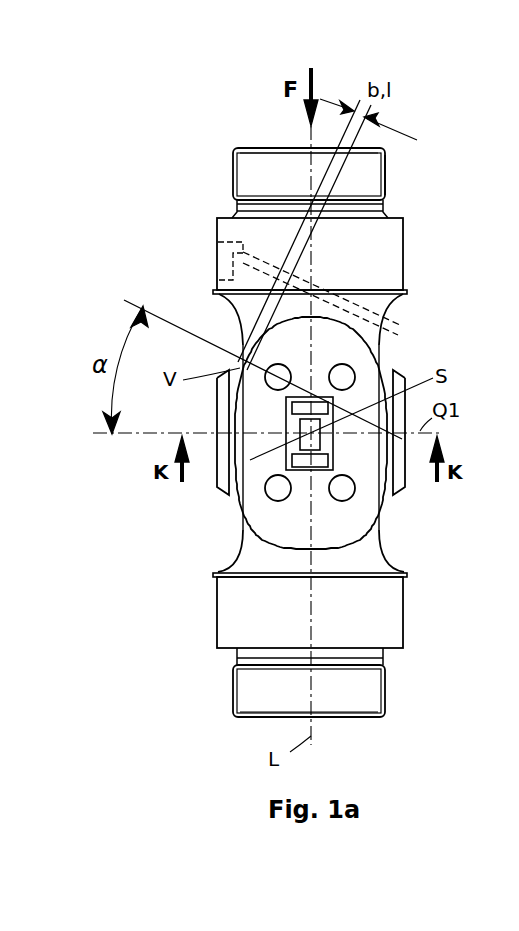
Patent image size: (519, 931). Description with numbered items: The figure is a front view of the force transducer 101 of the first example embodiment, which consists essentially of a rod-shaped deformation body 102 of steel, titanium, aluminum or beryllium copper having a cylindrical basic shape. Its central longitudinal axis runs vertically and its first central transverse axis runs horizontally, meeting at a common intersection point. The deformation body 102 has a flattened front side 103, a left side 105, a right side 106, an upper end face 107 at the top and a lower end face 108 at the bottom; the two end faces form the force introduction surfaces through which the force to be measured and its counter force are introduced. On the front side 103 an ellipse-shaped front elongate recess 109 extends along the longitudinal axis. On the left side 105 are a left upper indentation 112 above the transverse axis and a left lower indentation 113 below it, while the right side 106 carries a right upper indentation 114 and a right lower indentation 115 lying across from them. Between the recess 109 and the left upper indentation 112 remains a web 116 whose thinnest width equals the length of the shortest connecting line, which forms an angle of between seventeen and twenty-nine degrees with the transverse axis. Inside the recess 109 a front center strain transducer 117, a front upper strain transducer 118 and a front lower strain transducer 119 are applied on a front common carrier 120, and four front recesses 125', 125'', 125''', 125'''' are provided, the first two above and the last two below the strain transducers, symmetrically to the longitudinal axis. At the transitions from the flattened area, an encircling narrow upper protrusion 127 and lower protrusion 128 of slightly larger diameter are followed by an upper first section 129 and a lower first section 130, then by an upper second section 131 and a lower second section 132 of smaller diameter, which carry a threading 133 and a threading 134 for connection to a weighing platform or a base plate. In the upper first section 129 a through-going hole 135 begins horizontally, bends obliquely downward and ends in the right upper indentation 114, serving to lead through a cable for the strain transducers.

The force transducer 101 is at (147, 128).
The upper end face 107 is at (293, 148).
The threading 133 is at (386, 168).
The upper second section 131 is at (364, 184).
The upper first section 129 is at (382, 262).
The through-going hole 135 is at (220, 260).
The upper protrusion 127 is at (405, 292).
The right upper indentation 114 is at (381, 345).
The left upper indentation 112 is at (240, 333).
The web 116 is at (242, 364).
The front upper strain transducer 118 is at (286, 406).
The front center strain transducer 117 is at (291, 449).
The front lower strain transducer 119 is at (290, 462).
The front common carrier 120 is at (334, 458).
The first front recess 125' is at (286, 365).
The second front recess 125'' is at (335, 365).
The third front recess 125''' is at (289, 501).
The fourth front recess 125'''' is at (341, 501).
The left side 105 is at (217, 470).
The right side 106 is at (406, 474).
The front elongate recess 109 is at (380, 522).
The left lower indentation 113 is at (240, 555).
The right lower indentation 115 is at (383, 545).
The deformation body 102 is at (220, 578).
The front side 103 is at (243, 612).
The lower protrusion 128 is at (402, 580).
The lower first section 130 is at (390, 640).
The threading 134 is at (236, 697).
The lower second section 132 is at (368, 699).
The lower end face 108 is at (337, 724).